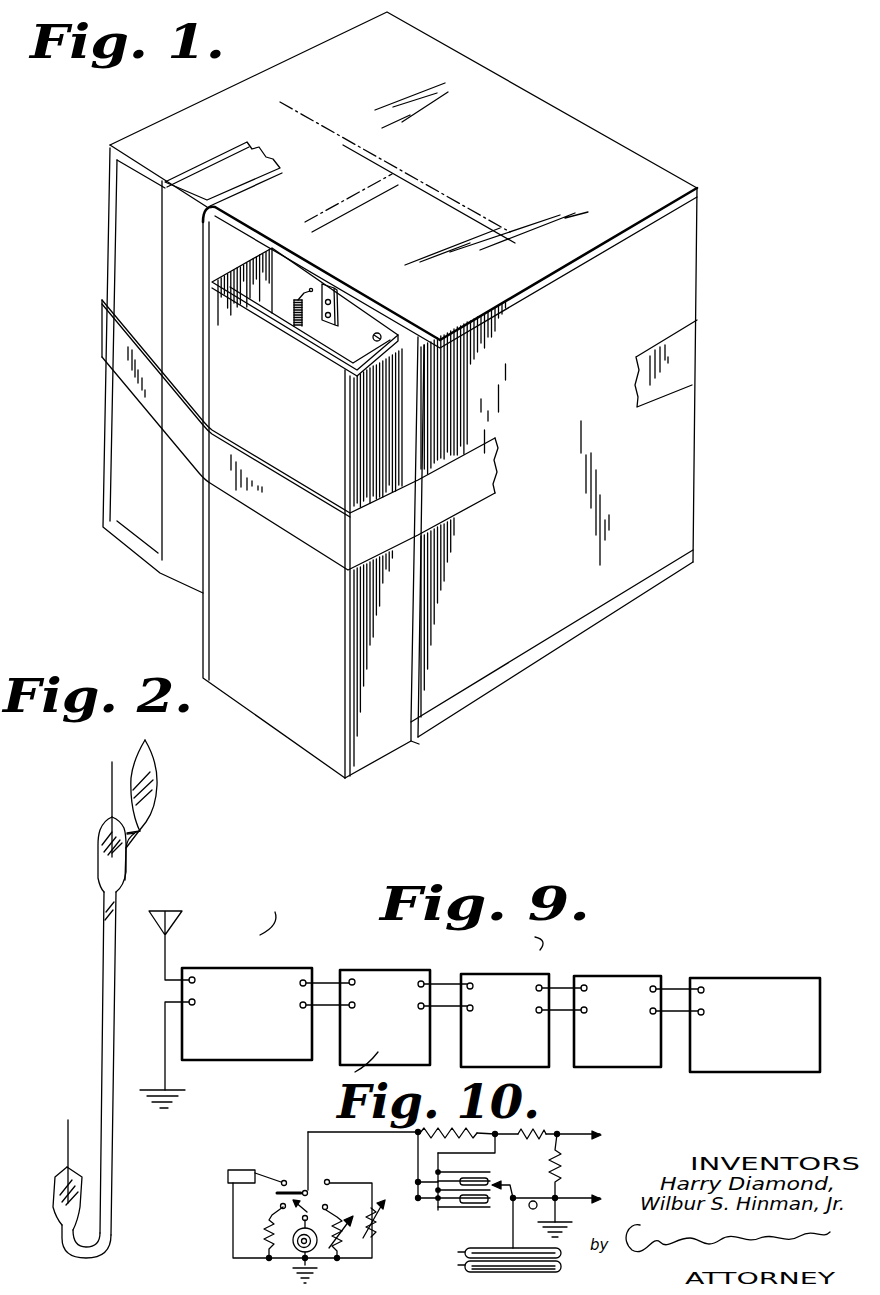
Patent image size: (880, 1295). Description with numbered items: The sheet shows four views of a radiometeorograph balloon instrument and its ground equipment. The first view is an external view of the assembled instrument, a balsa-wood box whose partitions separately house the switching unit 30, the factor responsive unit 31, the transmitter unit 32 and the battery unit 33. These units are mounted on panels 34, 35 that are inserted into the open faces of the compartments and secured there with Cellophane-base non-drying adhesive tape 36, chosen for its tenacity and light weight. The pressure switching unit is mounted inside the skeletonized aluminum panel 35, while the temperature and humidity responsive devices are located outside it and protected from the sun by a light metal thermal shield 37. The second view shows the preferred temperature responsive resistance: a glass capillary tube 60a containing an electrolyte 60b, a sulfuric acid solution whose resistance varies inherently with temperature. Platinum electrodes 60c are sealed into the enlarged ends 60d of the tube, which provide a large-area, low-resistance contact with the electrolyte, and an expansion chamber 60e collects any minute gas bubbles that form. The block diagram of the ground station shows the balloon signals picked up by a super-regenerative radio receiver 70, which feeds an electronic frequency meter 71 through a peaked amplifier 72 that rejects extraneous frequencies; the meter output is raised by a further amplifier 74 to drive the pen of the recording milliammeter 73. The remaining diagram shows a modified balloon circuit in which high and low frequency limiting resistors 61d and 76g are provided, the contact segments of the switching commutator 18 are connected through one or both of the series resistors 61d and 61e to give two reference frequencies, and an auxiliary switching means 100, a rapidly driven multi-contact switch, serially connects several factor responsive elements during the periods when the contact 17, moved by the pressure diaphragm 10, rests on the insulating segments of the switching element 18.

In FIG. 1, the switching unit 30 is at (253, 700).
In FIG. 1, the factor responsive unit 31 is at (307, 500).
In FIG. 1, the transmitter unit 32 is at (522, 115).
In FIG. 1, the battery unit 33 is at (310, 138).
In FIG. 1, the panel 34 is at (128, 242).
In FIG. 1, the panel 35 is at (352, 317).
In FIG. 1, the adhesive tape 36 is at (215, 167).
In FIG. 1, the thermal shield 37 is at (262, 305).
In FIG. 2, the capillary tube 60a is at (106, 1000).
In FIG. 2, the electrolyte 60b is at (130, 788).
In FIG. 2, the electrodes 60c is at (112, 792).
In FIG. 2, the enlarged ends 60d is at (102, 858).
In FIG. 2, the expansion chamber 60e is at (153, 765).
In FIG. 9, the super regenerative receiver 70 is at (245, 975).
In FIG. 9, the electronic frequency meter 71 is at (518, 950).
In FIG. 9, the peaked amplifier 72 is at (386, 978).
In FIG. 9, the recording milliammeter 73 is at (740, 993).
In FIG. 9, the amplifier 74 is at (612, 985).
In FIG. 10, the radio receiver 10 is at (487, 1252).
In FIG. 10, the contact 17 is at (511, 1184).
In FIG. 10, the switching commutator 18 is at (470, 1210).
In FIG. 10, the high frequency limiting resistor 61d is at (541, 1137).
In FIG. 10, the series resistor 61e is at (462, 1131).
In FIG. 10, the low frequency limiting resistor 76g is at (559, 1178).
In FIG. 10, the auxiliary switching means 100 is at (292, 1172).